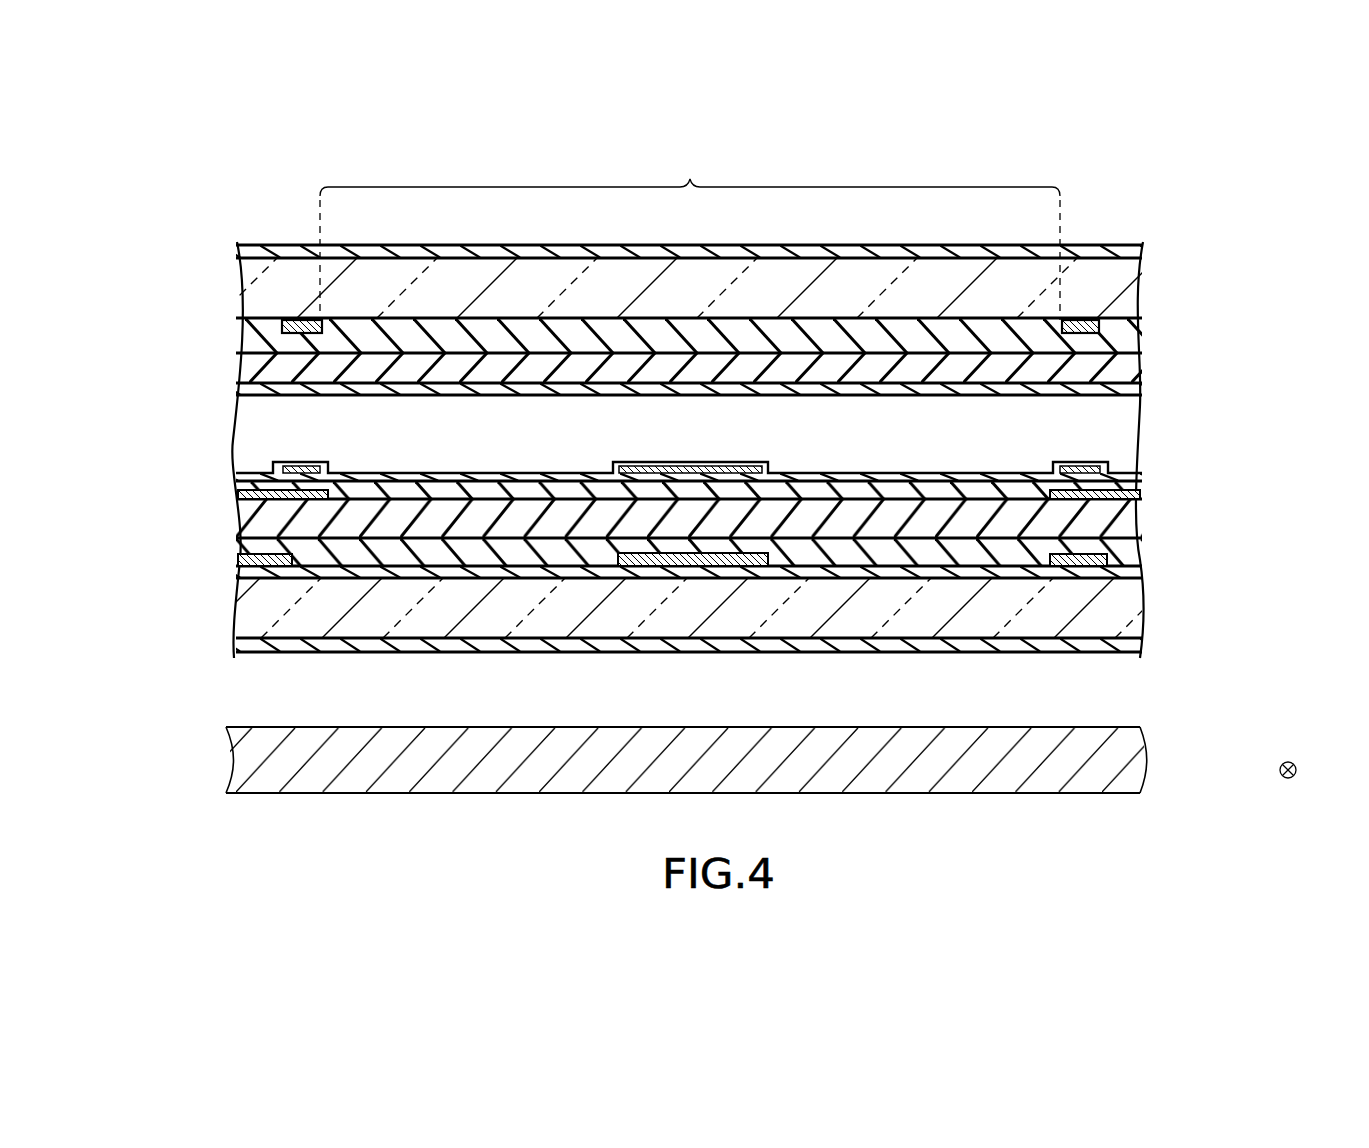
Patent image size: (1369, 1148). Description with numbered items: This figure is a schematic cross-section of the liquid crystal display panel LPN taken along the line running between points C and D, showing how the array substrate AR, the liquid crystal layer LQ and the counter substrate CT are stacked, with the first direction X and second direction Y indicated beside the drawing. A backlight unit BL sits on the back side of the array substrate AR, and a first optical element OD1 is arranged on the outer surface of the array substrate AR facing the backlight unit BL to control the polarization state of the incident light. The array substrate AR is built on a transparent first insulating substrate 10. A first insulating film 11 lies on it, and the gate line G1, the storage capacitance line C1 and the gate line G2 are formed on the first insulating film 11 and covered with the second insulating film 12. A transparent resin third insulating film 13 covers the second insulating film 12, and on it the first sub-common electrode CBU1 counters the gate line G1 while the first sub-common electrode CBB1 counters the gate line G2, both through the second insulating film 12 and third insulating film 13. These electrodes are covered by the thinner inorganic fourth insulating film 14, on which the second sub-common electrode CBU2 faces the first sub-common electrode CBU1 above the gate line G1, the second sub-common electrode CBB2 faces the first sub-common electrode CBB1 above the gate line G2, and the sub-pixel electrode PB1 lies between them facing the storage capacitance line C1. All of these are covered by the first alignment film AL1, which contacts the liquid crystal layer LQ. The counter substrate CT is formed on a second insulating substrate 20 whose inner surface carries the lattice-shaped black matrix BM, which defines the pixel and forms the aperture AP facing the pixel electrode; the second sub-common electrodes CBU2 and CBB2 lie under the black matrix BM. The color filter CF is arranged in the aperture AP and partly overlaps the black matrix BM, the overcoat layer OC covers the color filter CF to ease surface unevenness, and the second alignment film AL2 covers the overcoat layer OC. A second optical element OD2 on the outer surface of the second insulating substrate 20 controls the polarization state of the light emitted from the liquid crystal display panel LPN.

The aperture AP is at (690, 235).
The liquid crystal display panel LPN is at (1150, 231).
The second optical element OD2 is at (1144, 251).
The second insulating substrate 20 is at (1130, 277).
The counter substrate CT is at (238, 293).
The black matrix BM is at (283, 333).
The color filter CF is at (1130, 343).
The overcoat layer OC is at (1130, 370).
The second alignment film AL2 is at (1126, 393).
The second sub-common electrode CBU2 is at (283, 463).
The sub-pixel electrode PB1 is at (690, 464).
The second sub-common electrode CBB2 is at (1065, 464).
The liquid crystal layer LQ is at (1128, 448).
The first alignment film AL1 is at (1130, 475).
The fourth insulating film 14 is at (1136, 491).
The third insulating film 13 is at (1130, 522).
The second insulating film 12 is at (1130, 551).
The first insulating film 11 is at (1135, 573).
The first insulating substrate 10 is at (1125, 608).
The first optical element OD1 is at (1136, 645).
The array substrate AR is at (238, 607).
The line C-D end point C is at (240, 682).
The line C-D end point D is at (1142, 682).
The gate line G1 is at (290, 566).
The first sub-common electrode CBU1 is at (326, 500).
The storage capacitance line C1 is at (700, 566).
The gate line G2 is at (1090, 566).
The first sub-common electrode CBB1 is at (1047, 500).
The backlight unit BL is at (1132, 768).
The first direction X is at (1288, 787).
The second direction Y is at (1337, 770).